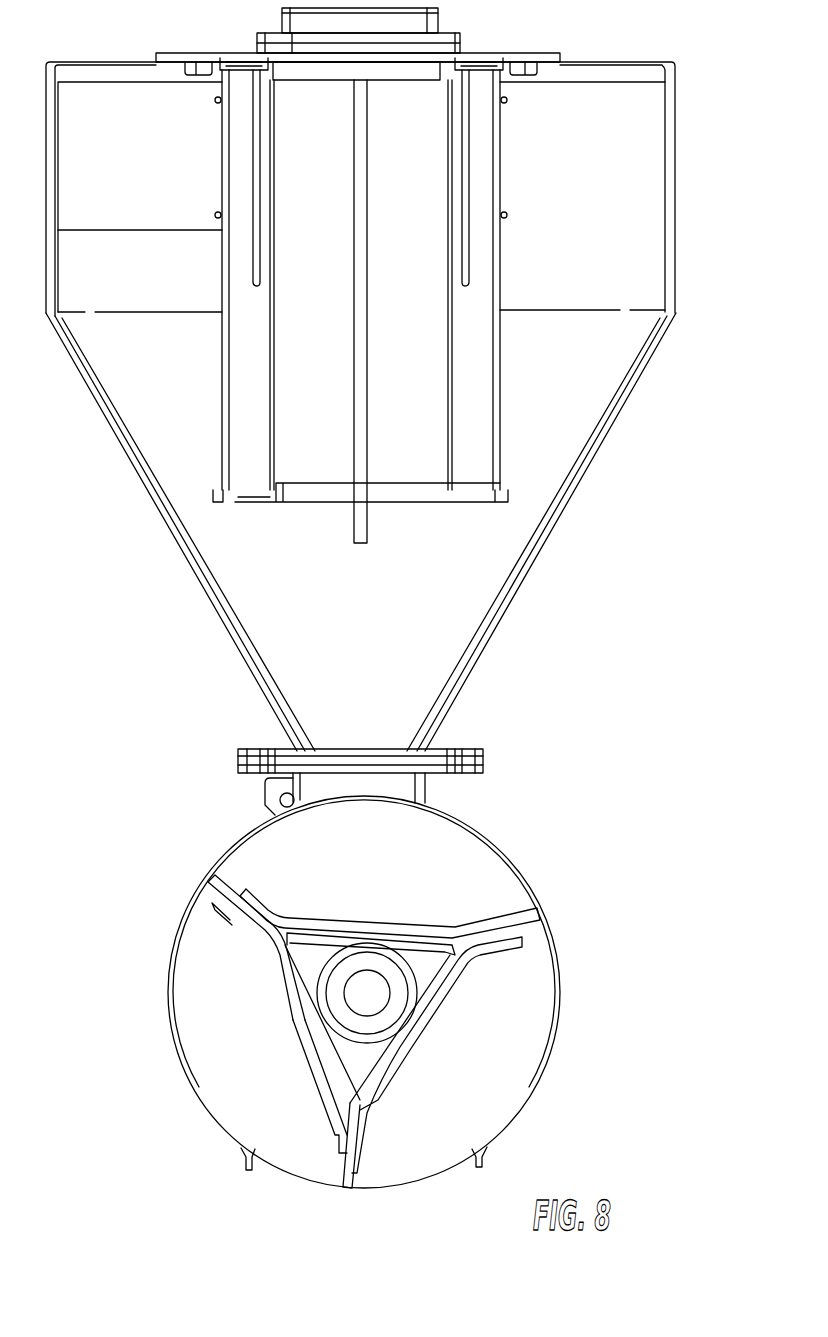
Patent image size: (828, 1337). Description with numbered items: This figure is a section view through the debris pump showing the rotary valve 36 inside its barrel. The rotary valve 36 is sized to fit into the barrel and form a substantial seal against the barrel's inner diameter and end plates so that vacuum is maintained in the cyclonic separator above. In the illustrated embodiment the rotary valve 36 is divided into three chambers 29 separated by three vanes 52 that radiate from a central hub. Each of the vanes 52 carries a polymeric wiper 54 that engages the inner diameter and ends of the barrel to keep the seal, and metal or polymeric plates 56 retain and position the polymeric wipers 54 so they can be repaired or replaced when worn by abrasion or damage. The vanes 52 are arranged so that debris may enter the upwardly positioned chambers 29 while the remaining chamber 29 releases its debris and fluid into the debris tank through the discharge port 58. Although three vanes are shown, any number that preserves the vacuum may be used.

The chambers 29 is at (258, 862).
The rotary valve 36 is at (498, 927).
The vanes 52 is at (228, 900).
The polymeric wipers 54 is at (230, 907).
The plates 56 is at (436, 935).
The discharge port 58 is at (272, 1165).